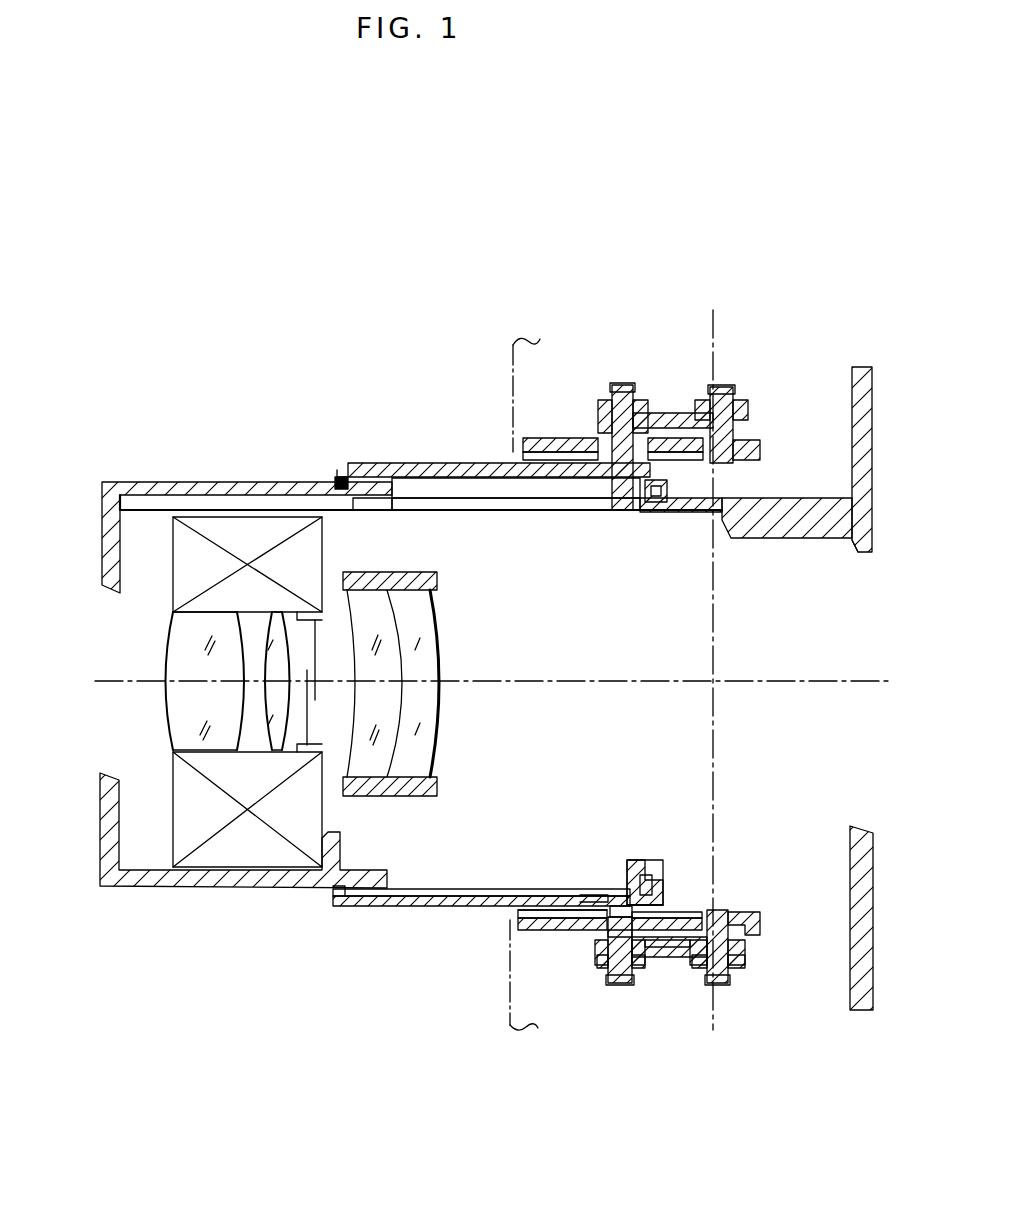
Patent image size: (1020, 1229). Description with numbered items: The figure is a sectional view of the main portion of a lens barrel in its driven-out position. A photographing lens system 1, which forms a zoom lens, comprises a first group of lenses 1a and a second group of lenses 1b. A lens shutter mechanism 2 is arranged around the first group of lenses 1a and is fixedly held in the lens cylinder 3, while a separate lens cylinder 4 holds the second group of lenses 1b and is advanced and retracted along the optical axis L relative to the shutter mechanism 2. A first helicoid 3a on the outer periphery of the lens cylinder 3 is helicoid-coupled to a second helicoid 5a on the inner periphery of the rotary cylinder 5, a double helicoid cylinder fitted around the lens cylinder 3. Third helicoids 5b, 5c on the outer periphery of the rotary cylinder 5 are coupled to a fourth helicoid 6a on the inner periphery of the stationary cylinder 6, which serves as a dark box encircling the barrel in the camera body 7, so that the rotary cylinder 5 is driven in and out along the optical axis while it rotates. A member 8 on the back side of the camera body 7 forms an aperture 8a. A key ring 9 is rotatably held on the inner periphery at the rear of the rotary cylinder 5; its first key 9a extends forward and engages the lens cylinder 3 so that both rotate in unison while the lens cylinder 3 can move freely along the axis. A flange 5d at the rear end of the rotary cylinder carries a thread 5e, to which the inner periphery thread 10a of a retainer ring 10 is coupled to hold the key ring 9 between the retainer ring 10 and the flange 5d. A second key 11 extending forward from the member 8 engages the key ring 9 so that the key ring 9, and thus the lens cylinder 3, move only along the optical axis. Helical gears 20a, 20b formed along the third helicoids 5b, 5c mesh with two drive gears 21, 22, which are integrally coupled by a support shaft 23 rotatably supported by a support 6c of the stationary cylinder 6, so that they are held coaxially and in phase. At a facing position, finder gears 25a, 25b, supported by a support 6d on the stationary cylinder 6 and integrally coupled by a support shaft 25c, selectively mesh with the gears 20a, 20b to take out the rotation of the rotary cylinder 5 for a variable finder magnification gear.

The photographing lens system 1 is at (276, 683).
The first group of lenses 1a is at (172, 716).
The second group of lenses 1b is at (440, 622).
The lens shutter mechanism 2 is at (173, 588).
The lens cylinder 3 is at (210, 484).
The first helicoid 3a is at (346, 479).
The lens cylinder 4 is at (385, 580).
The rotary cylinder 5 is at (418, 462).
The second helicoid 5a is at (468, 470).
The third helicoid 5b is at (522, 955).
The third helicoid 5c is at (600, 933).
The flange 5d is at (617, 905).
The thread 5e is at (612, 900).
The stationary cylinder 6 is at (555, 437).
The fourth helicoid 6a is at (740, 918).
The support 6c is at (746, 961).
The support 6d is at (600, 404).
The camera body 7 is at (513, 345).
The member 8 is at (873, 405).
The aperture 8a is at (860, 553).
The key ring 9 is at (640, 862).
The first key 9a is at (505, 511).
The retainer ring 10 is at (660, 871).
The inner periphery thread 10a is at (665, 890).
The second key 11 is at (780, 539).
The helical gear 20a is at (538, 973).
The helical gear 20b is at (607, 932).
The drive gear 21 is at (718, 986).
The drive gear 22 is at (618, 986).
The support shaft 23 is at (672, 958).
The finder gear 25a is at (722, 390).
The finder gear 25b is at (628, 384).
The support shaft 25c is at (688, 430).
The optical axis L is at (803, 679).